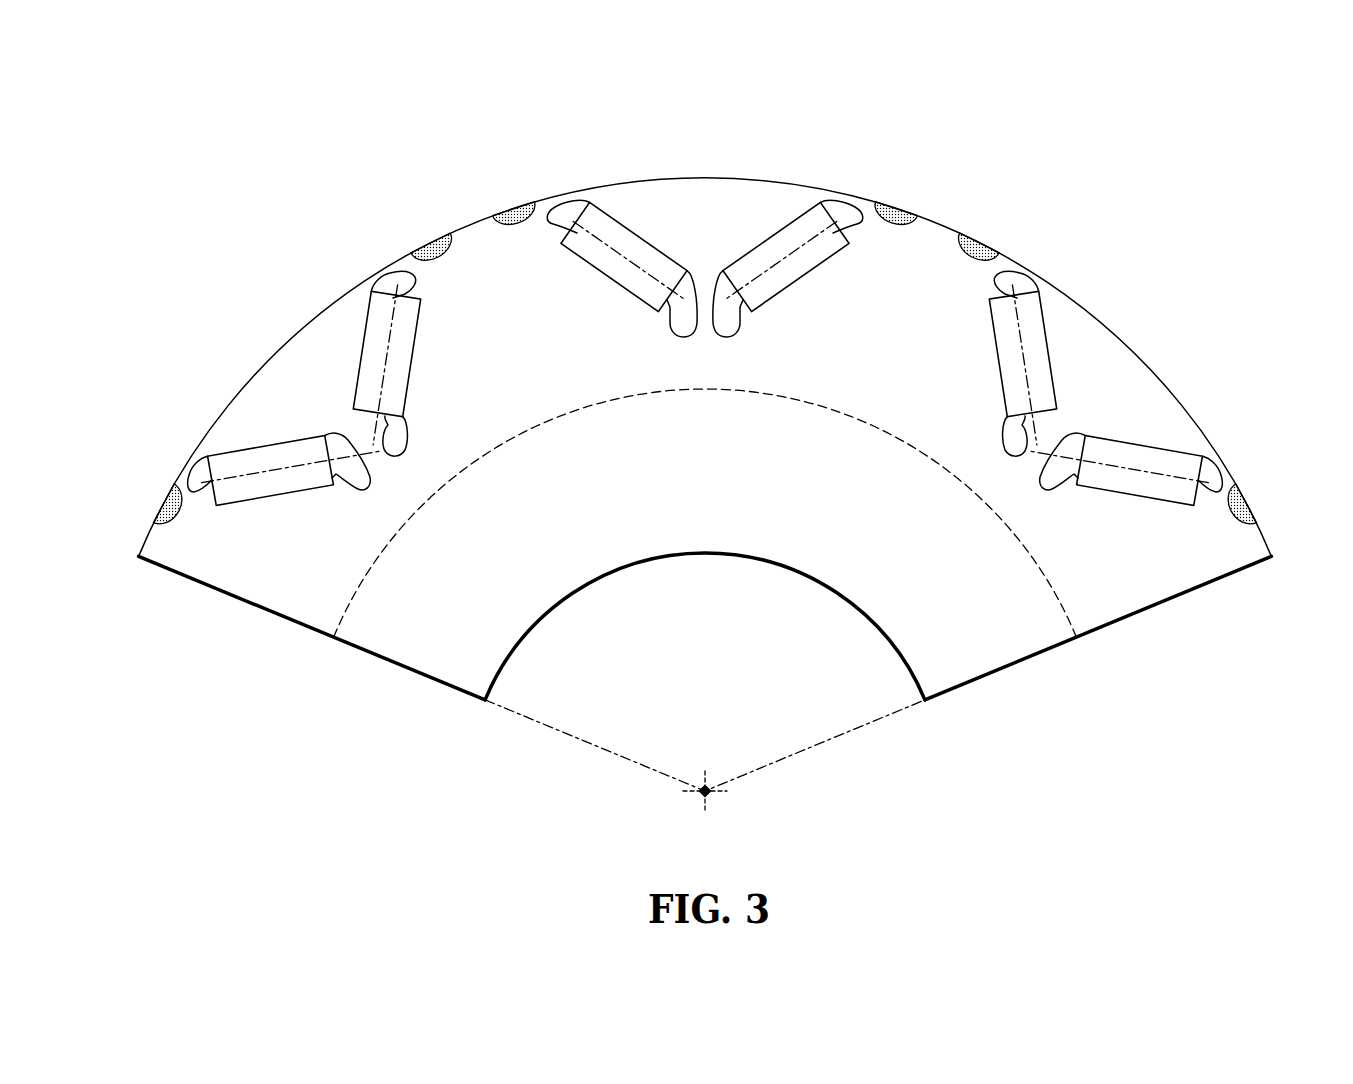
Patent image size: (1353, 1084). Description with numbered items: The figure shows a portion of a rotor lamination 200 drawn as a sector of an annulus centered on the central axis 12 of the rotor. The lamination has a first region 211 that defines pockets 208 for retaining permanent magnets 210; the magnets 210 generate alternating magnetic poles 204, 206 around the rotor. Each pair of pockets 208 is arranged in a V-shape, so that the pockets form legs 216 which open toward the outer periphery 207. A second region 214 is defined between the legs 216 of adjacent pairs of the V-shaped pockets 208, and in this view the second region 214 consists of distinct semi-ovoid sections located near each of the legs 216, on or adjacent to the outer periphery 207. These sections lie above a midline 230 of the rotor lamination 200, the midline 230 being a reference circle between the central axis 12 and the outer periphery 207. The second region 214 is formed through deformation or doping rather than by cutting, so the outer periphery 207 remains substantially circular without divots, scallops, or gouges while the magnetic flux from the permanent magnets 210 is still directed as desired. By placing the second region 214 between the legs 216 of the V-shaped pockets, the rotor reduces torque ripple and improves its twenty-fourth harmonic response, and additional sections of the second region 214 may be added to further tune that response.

The rotor lamination 200 is at (1080, 118).
The magnetic pole 204 is at (727, 166).
The magnetic pole 206 is at (260, 353).
The outer periphery 207 is at (342, 298).
The pocket 208 is at (572, 220).
The permanent magnet 210 is at (615, 267).
The first region 211 is at (725, 535).
The second region 214 is at (510, 210).
The leg 216 is at (729, 251).
The midline 230 is at (351, 612).
The central axis 12 is at (710, 796).